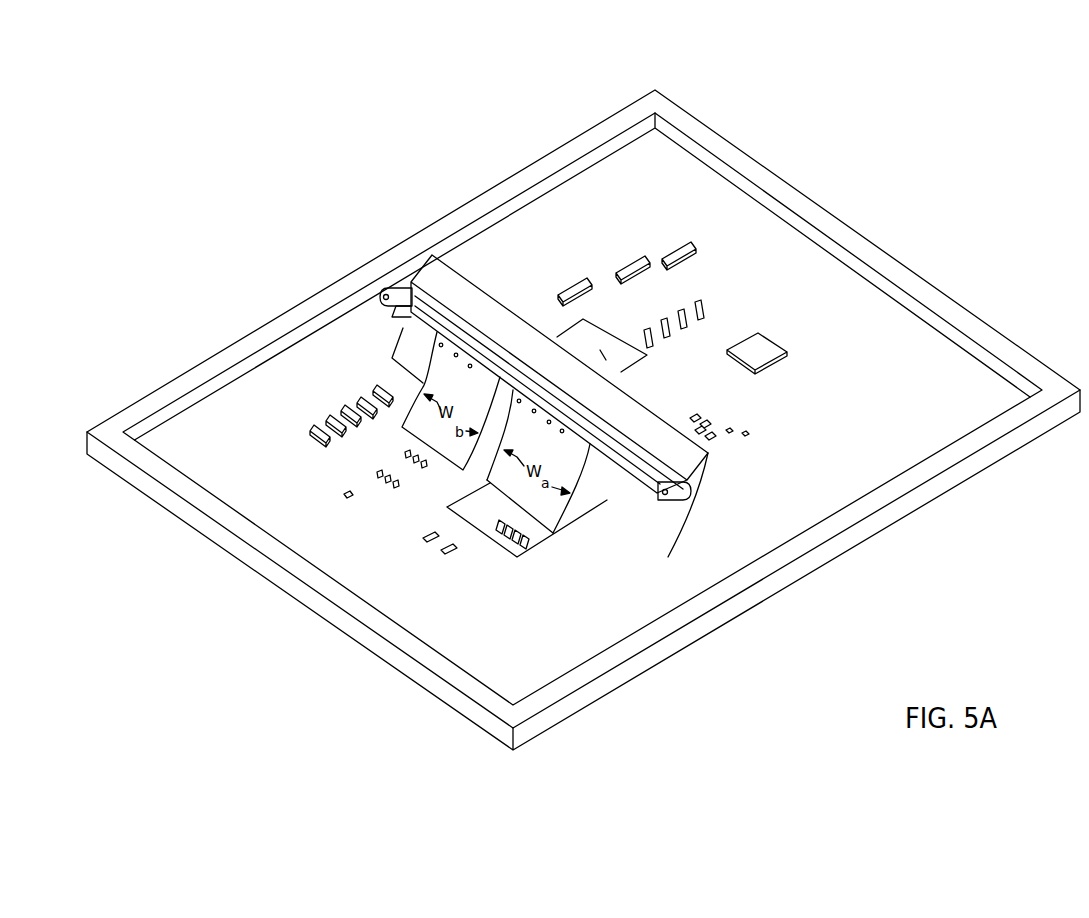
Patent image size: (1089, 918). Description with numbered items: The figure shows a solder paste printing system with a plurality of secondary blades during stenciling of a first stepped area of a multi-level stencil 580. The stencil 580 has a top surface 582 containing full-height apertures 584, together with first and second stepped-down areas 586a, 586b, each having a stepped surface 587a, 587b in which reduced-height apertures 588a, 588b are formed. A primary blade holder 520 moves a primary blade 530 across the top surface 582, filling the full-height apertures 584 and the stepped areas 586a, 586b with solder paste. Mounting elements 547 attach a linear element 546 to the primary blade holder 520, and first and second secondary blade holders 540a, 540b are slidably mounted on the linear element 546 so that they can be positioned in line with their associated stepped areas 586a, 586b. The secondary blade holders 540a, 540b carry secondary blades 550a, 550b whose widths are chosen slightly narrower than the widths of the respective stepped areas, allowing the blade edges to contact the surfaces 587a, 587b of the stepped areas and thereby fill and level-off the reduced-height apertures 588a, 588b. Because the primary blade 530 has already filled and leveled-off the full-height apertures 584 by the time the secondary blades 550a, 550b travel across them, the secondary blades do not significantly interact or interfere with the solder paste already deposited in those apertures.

The primary blade holder 520 is at (510, 320).
The primary blade 530 is at (677, 520).
The secondary blade holder 540a is at (592, 448).
The secondary blade holder 540b is at (436, 340).
The linear element 546 is at (393, 313).
The mounting elements 547 is at (383, 282).
The secondary blade 550a is at (490, 483).
The secondary blade 550b is at (423, 425).
The multi-level stencil 580 is at (932, 360).
The top surface 582 is at (873, 323).
The full-height apertures 584 is at (310, 428).
The first stepped area 586a is at (588, 520).
The second stepped area 586b is at (600, 350).
The surface of the stepped area 587a is at (483, 513).
The surface of the stepped area 587b is at (573, 340).
The reduced-height apertures 588a is at (523, 540).
The reduced-height apertures 588b is at (707, 277).